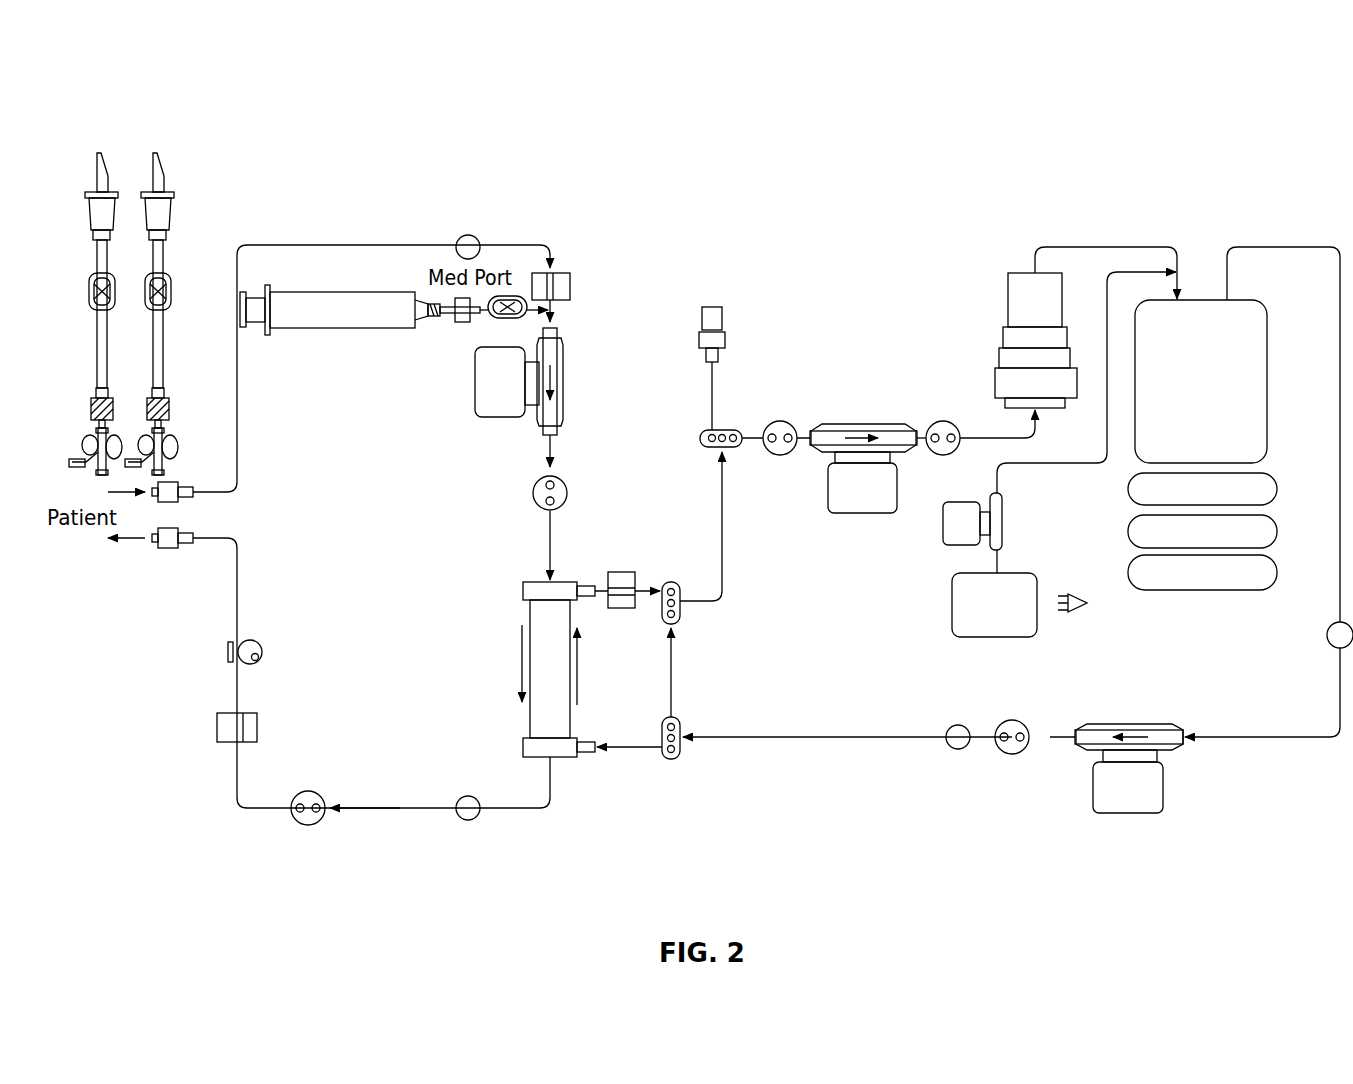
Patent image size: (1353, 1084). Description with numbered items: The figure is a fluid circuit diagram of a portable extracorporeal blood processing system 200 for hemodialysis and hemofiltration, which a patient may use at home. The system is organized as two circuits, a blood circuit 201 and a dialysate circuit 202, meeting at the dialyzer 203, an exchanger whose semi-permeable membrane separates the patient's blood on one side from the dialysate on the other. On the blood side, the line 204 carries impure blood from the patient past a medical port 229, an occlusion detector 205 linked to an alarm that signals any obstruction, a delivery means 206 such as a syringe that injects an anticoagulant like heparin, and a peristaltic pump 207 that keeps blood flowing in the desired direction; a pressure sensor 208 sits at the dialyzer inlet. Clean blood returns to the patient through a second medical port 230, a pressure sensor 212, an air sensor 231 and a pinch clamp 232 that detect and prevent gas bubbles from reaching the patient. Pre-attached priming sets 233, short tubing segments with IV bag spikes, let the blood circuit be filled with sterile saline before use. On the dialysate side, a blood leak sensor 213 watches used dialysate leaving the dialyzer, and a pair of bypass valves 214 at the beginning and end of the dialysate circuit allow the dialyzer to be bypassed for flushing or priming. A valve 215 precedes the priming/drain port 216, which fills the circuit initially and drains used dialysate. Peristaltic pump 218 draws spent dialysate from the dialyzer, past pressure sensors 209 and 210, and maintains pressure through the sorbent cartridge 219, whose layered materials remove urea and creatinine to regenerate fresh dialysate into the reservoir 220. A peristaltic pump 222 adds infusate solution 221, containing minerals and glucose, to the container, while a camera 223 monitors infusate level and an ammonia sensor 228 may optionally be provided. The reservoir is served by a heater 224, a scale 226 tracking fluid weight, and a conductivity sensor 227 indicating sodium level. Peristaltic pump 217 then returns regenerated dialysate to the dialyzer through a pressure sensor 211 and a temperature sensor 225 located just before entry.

The extracorporeal blood processing system 200 is at (143, 75).
The blood circuit 201 is at (472, 184).
The dialysate circuit 202 is at (1080, 199).
The dialyzer 203 is at (477, 664).
The line 204 is at (307, 239).
The occlusion detector 205 is at (602, 338).
The delivery means 206 is at (310, 349).
The peristaltic pump 207 is at (370, 461).
The pressure sensor 208 is at (477, 529).
The pressure sensor 209 is at (760, 482).
The pressure sensor 210 is at (915, 354).
The pressure sensor 211 is at (1000, 842).
The pressure sensor 212 is at (288, 916).
The blood leak sensor 213 is at (612, 734).
The bypass valves 214 is at (687, 613).
The valve 215 is at (650, 451).
The priming/drain port 216 is at (740, 326).
The peristaltic pump 217 is at (1172, 794).
The peristaltic pump 218 is at (842, 631).
The sorbent cartridge 219 is at (960, 292).
The reservoir 220 is at (1181, 434).
The infusate solution 221 is at (974, 664).
The peristaltic pump 222 is at (938, 491).
The camera 223 is at (1115, 644).
The heater 224 is at (1283, 544).
The temperature sensor 225 is at (892, 769).
The scale 226 is at (1283, 585).
The conductivity sensor 227 is at (1283, 501).
The ammonia sensor 228 is at (1260, 707).
The medical port 229 is at (485, 239).
The medical port 230 is at (448, 877).
The air sensor 231 is at (160, 739).
The pinch clamp 232 is at (172, 661).
The priming sets 233 is at (230, 152).